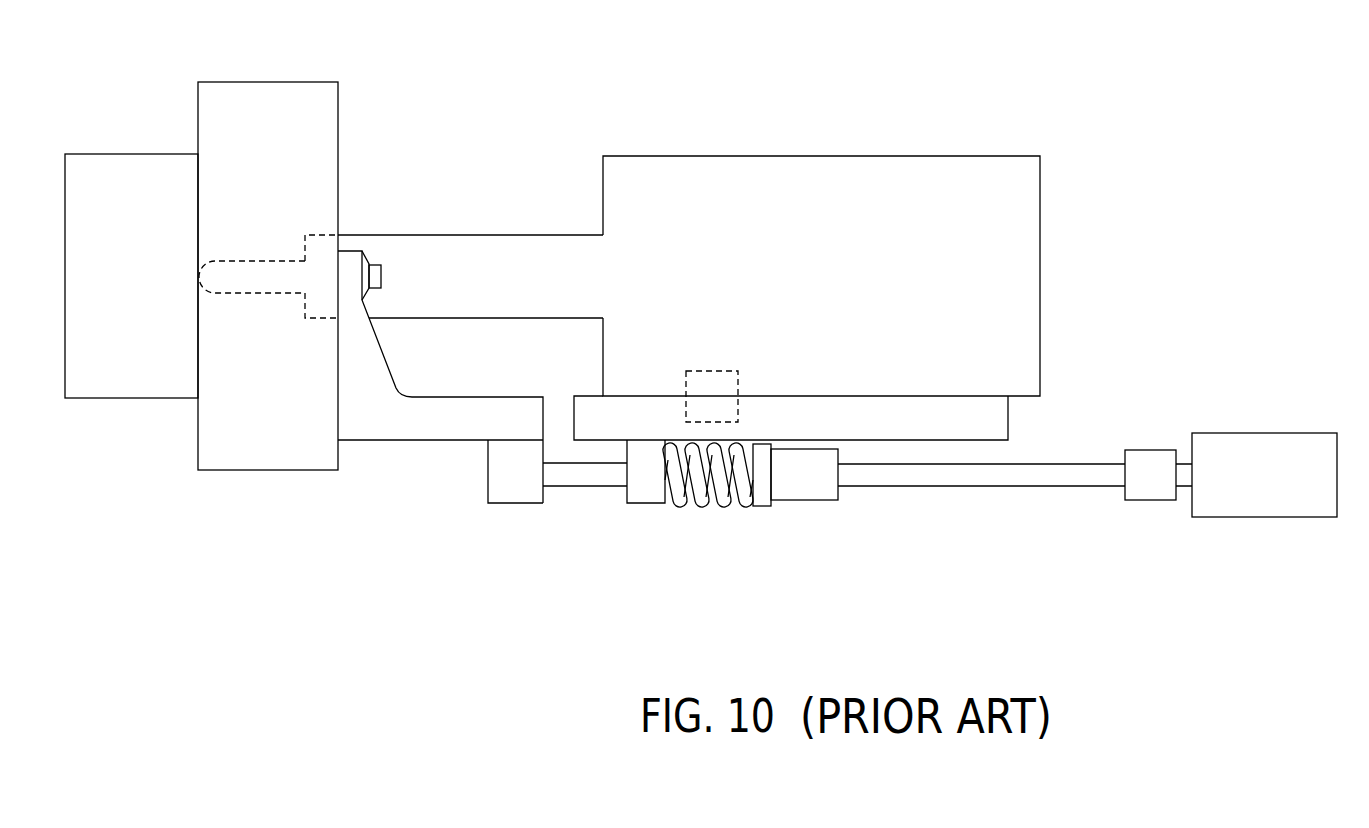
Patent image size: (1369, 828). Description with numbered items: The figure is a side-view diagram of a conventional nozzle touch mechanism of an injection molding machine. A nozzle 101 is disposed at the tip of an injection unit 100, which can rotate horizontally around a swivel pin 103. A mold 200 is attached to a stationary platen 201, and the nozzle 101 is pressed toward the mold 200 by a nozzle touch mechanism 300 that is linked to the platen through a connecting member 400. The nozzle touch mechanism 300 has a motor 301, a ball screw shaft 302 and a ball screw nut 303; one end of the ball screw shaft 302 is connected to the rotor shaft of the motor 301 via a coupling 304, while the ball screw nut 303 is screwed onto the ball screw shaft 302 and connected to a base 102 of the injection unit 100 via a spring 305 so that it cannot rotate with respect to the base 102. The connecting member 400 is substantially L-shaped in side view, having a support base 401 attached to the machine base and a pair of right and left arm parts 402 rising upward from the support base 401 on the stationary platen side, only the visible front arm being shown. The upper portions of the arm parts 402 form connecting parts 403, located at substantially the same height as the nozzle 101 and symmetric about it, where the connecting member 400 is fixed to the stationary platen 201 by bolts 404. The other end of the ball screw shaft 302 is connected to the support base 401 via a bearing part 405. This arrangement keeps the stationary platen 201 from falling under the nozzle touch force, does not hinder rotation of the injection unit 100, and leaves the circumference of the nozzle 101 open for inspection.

The injection unit 100 is at (825, 88).
The nozzle 101 is at (232, 261).
The base 102 is at (1009, 415).
The swivel pin 103 is at (711, 371).
The mold 200 is at (138, 154).
The stationary platen 201 is at (263, 82).
The nozzle touch mechanism 300 is at (725, 585).
The motor 301 is at (1276, 433).
The ball screw shaft 302 is at (955, 487).
The ball screw nut 303 is at (810, 500).
The coupling 304 is at (1150, 500).
The spring 305 is at (683, 503).
The connecting member 400 is at (357, 505).
The support base 401 is at (517, 397).
The arm parts 402 is at (390, 368).
The connecting parts 403 is at (356, 251).
The bolts 404 is at (381, 276).
The bearing part 405 is at (517, 503).